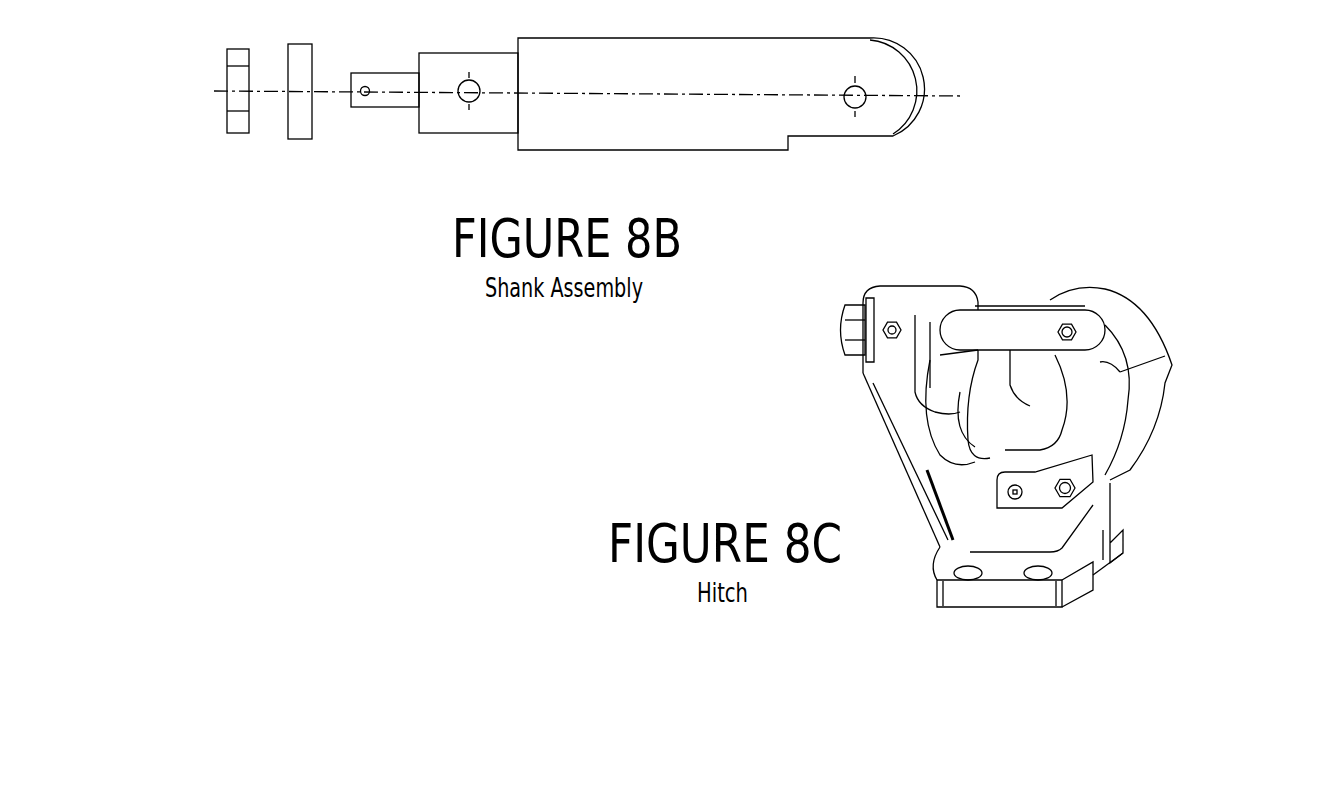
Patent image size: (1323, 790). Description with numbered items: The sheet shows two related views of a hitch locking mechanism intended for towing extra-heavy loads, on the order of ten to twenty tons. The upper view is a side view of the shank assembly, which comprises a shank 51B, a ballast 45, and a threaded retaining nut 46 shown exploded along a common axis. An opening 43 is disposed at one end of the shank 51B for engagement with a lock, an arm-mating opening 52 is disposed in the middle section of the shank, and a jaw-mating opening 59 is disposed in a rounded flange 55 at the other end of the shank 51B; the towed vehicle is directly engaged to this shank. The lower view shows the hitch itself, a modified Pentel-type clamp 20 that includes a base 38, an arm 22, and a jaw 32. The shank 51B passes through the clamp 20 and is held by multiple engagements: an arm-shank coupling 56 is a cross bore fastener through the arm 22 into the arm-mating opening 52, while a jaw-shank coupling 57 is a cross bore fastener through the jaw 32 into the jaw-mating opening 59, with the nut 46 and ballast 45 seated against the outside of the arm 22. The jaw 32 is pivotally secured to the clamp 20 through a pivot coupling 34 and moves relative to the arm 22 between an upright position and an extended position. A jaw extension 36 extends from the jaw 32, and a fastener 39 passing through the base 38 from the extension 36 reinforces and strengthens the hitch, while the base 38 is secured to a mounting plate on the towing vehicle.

In FIG. 8C, the clamp 20 is at (1003, 427).
In FIG. 8C, the arm 22 is at (895, 395).
In FIG. 8C, the jaw 32 is at (1120, 372).
In FIG. 8C, the pivotal coupling 34 is at (1080, 486).
In FIG. 8C, the jaw extension 36 is at (1038, 498).
In FIG. 8C, the base 38 is at (962, 512).
In FIG. 8C, the jaw extension fastener 39 is at (1018, 500).
In FIG. 8B, the opening 43 is at (368, 98).
In FIG. 8B, the ballast 45 is at (300, 128).
In FIG. 8C, the ballast 45 is at (875, 300).
In FIG. 8B, the threaded retaining nut 46 is at (235, 126).
In FIG. 8C, the threaded retaining nut 46 is at (850, 302).
In FIG. 8B, the shank 51B is at (650, 128).
In FIG. 8C, the shank 51B is at (1035, 330).
In FIG. 8B, the arm-mating opening 52 is at (470, 104).
In FIG. 8B, the flange 55 is at (908, 80).
In FIG. 8C, the arm-shank coupling 56 is at (888, 340).
In FIG. 8C, the jaw-shank coupling 57 is at (1068, 322).
In FIG. 8B, the jaw-mating opening 59 is at (859, 85).